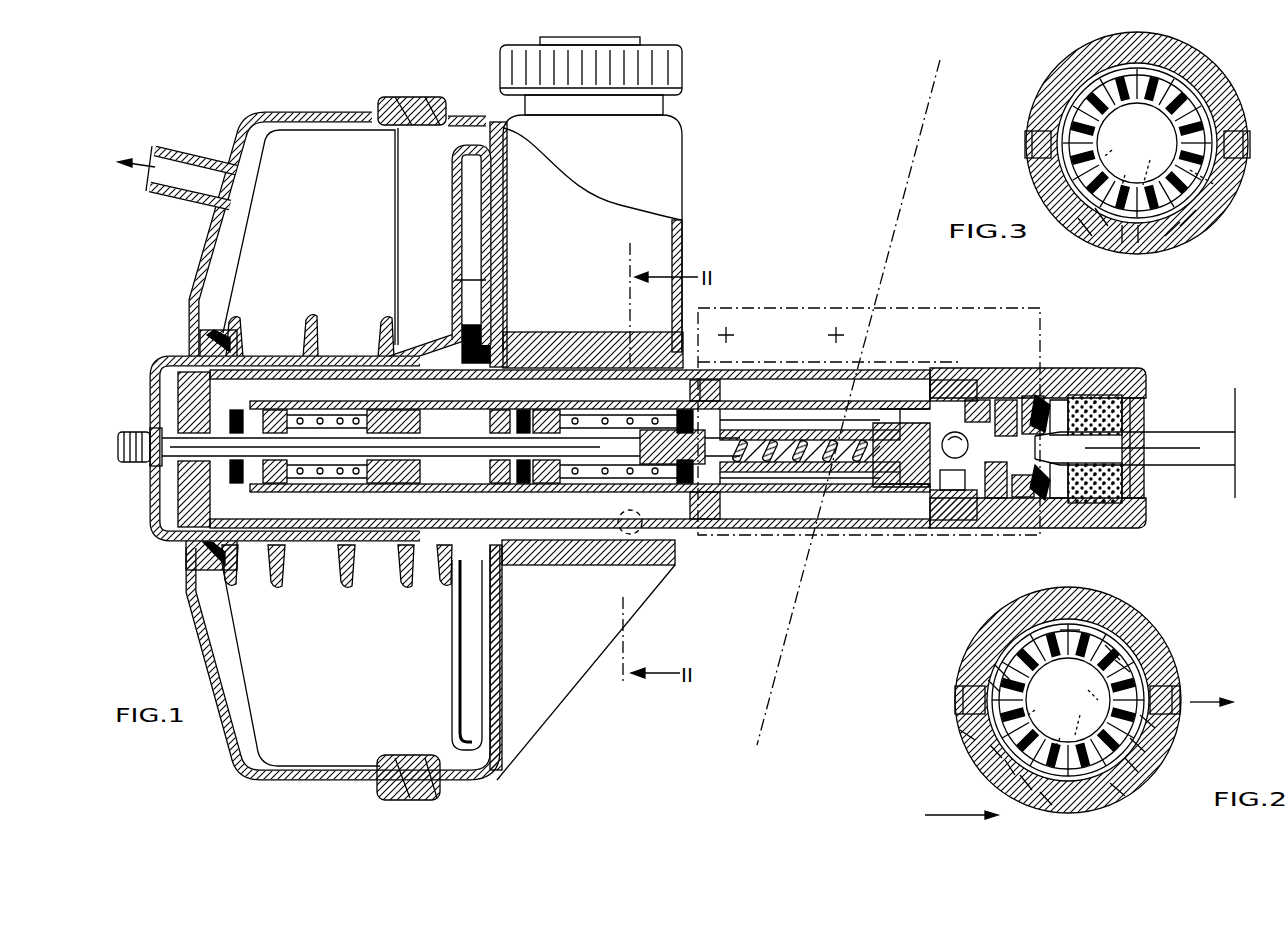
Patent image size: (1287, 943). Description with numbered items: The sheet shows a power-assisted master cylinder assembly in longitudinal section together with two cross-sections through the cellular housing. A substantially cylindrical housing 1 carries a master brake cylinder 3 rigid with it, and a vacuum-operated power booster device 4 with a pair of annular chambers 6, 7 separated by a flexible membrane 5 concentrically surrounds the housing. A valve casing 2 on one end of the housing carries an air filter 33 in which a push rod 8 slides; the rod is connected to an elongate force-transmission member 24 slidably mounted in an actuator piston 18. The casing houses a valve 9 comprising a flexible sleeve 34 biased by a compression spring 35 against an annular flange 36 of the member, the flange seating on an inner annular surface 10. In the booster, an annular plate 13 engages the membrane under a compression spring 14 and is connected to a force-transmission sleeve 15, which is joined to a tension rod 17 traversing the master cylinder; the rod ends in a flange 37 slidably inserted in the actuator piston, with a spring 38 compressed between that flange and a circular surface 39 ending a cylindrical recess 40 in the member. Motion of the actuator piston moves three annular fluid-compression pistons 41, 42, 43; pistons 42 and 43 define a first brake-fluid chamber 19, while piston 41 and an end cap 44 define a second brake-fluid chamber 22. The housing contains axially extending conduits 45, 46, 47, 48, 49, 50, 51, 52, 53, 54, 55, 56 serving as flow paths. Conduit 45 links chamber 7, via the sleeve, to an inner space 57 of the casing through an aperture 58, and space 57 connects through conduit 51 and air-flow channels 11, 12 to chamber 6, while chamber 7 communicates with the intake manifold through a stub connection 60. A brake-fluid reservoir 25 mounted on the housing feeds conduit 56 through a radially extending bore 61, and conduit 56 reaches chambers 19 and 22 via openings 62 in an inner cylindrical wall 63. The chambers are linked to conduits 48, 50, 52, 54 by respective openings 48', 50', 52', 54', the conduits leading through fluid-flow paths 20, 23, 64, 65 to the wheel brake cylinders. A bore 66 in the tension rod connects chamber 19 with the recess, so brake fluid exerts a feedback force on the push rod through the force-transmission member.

In FIG. 1, the housing 1 is at (792, 372).
In FIG. 3, the housing 1 is at (1062, 130).
In FIG. 2, the housing 1 is at (1130, 682).
In FIG. 1, the valve casing 2 is at (1095, 390).
In FIG. 1, the master brake cylinder 3 is at (172, 510).
In FIG. 1, the power booster device 4 is at (235, 755).
In FIG. 2, the power booster device 4 is at (965, 736).
In FIG. 1, the membrane 5 is at (385, 108).
In FIG. 1, the annular chamber 6 is at (467, 770).
In FIG. 1, the annular chamber 7 is at (322, 750).
In FIG. 1, the push rod 8 is at (1190, 438).
In FIG. 1, the valve 9 is at (1027, 497).
In FIG. 1, the inner annular surface 10 is at (960, 480).
In FIG. 1, the air-flow channel 11 is at (502, 360).
In FIG. 1, the air-flow channel 12 is at (505, 548).
In FIG. 1, the annular plate 13 is at (470, 205).
In FIG. 1, the compression spring 14 is at (323, 323).
In FIG. 1, the force-transmission sleeve 15 is at (190, 362).
In FIG. 1, the tension rod 17 is at (160, 470).
In FIG. 1, the actuator piston 18 is at (888, 413).
In FIG. 1, the first brake-fluid chamber 19 is at (680, 528).
In FIG. 1, the fluid-flow path 20 is at (600, 560).
In FIG. 3, the fluid-flow path 20 is at (1247, 142).
In FIG. 2, the fluid-flow path 20 is at (1178, 700).
In FIG. 1, the second brake-fluid chamber 22 is at (317, 548).
In FIG. 1, the fluid-flow path 23 is at (606, 542).
In FIG. 3, the fluid-flow path 23 is at (1185, 238).
In FIG. 2, the fluid-flow path 23 is at (1120, 790).
In FIG. 1, the force-transmission member 24 is at (897, 498).
In FIG. 1, the brake-fluid reservoir 25 is at (610, 213).
In FIG. 1, the air filter 33 is at (1120, 392).
In FIG. 1, the flexible sleeve 34 is at (1007, 405).
In FIG. 1, the compression spring 35 is at (1003, 500).
In FIG. 1, the annular flange 36 is at (980, 400).
In FIG. 1, the flange 37 is at (727, 495).
In FIG. 1, the spring 38 is at (790, 472).
In FIG. 1, the circular surface 39 is at (868, 478).
In FIG. 1, the cylindrical recess 40 is at (752, 472).
In FIG. 1, the fluid-compression piston 41 is at (400, 405).
In FIG. 1, the fluid-compression piston 42 is at (520, 405).
In FIG. 1, the fluid-compression piston 43 is at (725, 368).
In FIG. 1, the end cap 44 is at (178, 405).
In FIG. 1, the conduit 45 is at (760, 385).
In FIG. 2, the conduit 45 is at (1075, 630).
In FIG. 2, the conduit 46 is at (1113, 652).
In FIG. 2, the conduit 47 is at (1122, 665).
In FIG. 2, the conduit 48 is at (1179, 732).
In FIG. 2, the opening 48' is at (1083, 684).
In FIG. 2, the conduit 49 is at (1140, 745).
In FIG. 2, the conduit 50 is at (1159, 774).
In FIG. 2, the opening 50' is at (1083, 713).
In FIG. 1, the conduit 51 is at (187, 543).
In FIG. 2, the conduit 51 is at (1045, 800).
In FIG. 2, the conduit 52 is at (968, 774).
In FIG. 2, the opening 52' is at (1067, 737).
In FIG. 2, the conduit 53 is at (995, 752).
In FIG. 2, the conduit 54 is at (958, 669).
In FIG. 2, the opening 54' is at (1044, 706).
In FIG. 2, the conduit 55 is at (1000, 672).
In FIG. 3, the conduit 56 is at (1090, 102).
In FIG. 2, the conduit 56 is at (1010, 655).
In FIG. 1, the inner space 57 is at (940, 492).
In FIG. 1, the aperture 58 is at (990, 400).
In FIG. 1, the stub connection 60 is at (200, 172).
In FIG. 3, the radially extending bore 61 is at (1100, 84).
In FIG. 2, the radially extending bore 61 is at (1030, 622).
In FIG. 3, the openings 62 is at (1137, 143).
In FIG. 2, the openings 62 is at (1068, 700).
In FIG. 3, the inner cylindrical wall 63 is at (1127, 242).
In FIG. 3, the fluid-flow path 64 is at (1087, 236).
In FIG. 2, the fluid-flow path 64 is at (1025, 782).
In FIG. 3, the fluid-flow path 65 is at (1028, 156).
In FIG. 2, the fluid-flow path 65 is at (958, 707).
In FIG. 1, the bore 66 is at (708, 495).